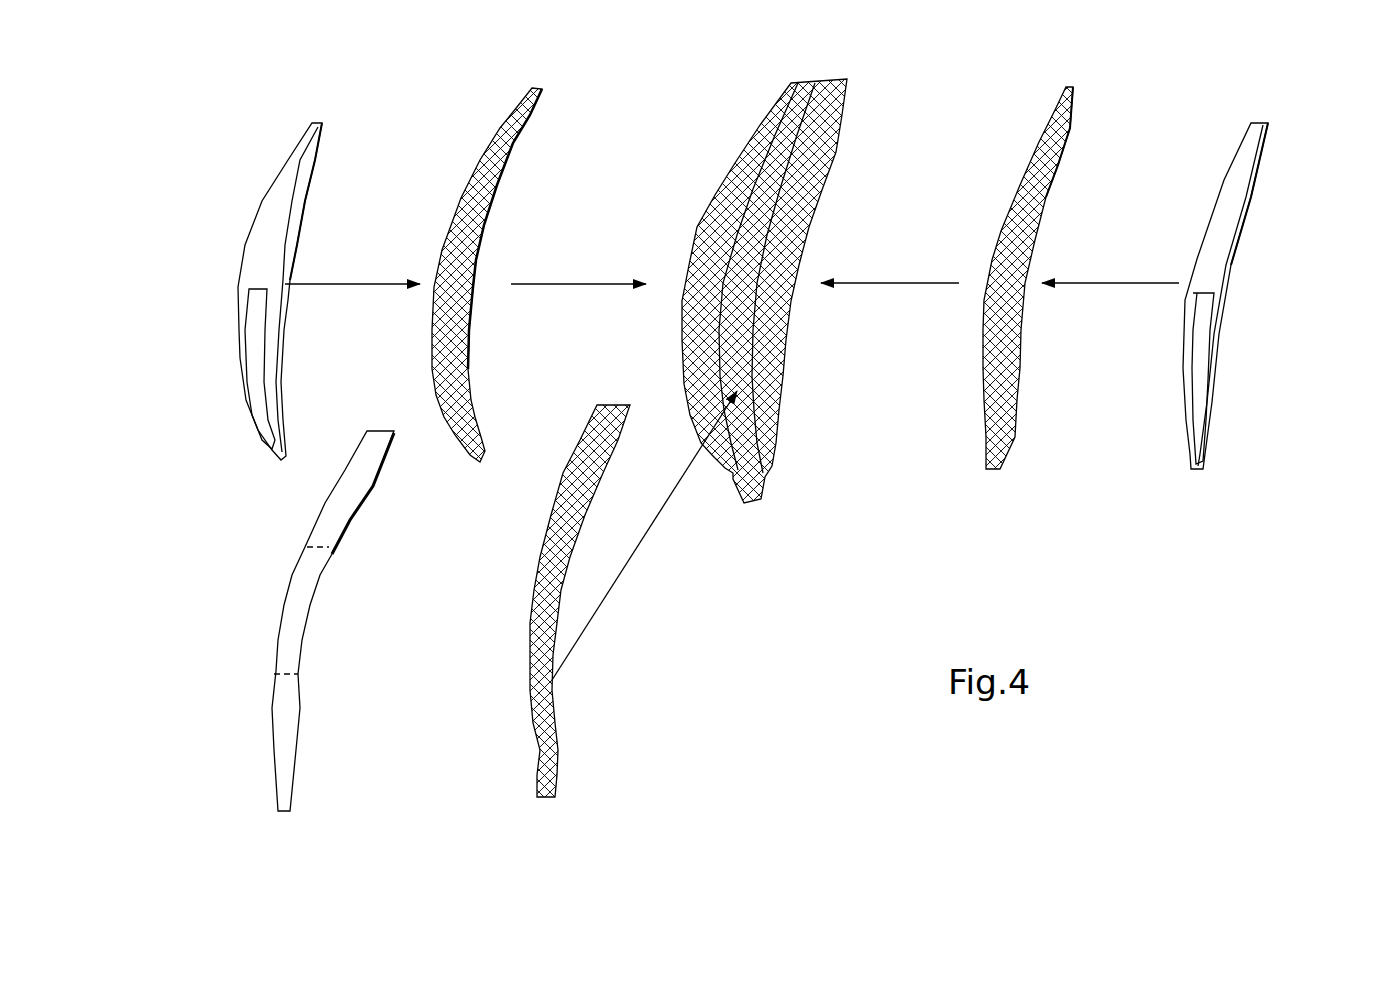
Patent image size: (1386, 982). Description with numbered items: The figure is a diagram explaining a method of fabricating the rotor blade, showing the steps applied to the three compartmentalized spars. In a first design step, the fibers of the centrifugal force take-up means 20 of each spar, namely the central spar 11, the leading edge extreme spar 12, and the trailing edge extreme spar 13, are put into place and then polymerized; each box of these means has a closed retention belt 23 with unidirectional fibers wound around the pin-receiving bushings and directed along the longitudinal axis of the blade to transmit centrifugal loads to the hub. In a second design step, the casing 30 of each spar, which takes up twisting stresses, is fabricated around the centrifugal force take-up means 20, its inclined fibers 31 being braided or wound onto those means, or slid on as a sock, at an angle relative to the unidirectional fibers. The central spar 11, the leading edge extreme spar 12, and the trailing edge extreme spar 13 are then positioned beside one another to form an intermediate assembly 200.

The central spar 11 is at (231, 751).
The leading edge extreme spar 12 is at (300, 127).
The trailing edge extreme spar 13 is at (1238, 144).
The centrifugal force take-up means 20 is at (749, 436).
The retention belt 23 is at (314, 201).
The casing 30 is at (752, 418).
The inclined fibers 31 is at (508, 110).
The intermediate assembly 200 is at (780, 135).